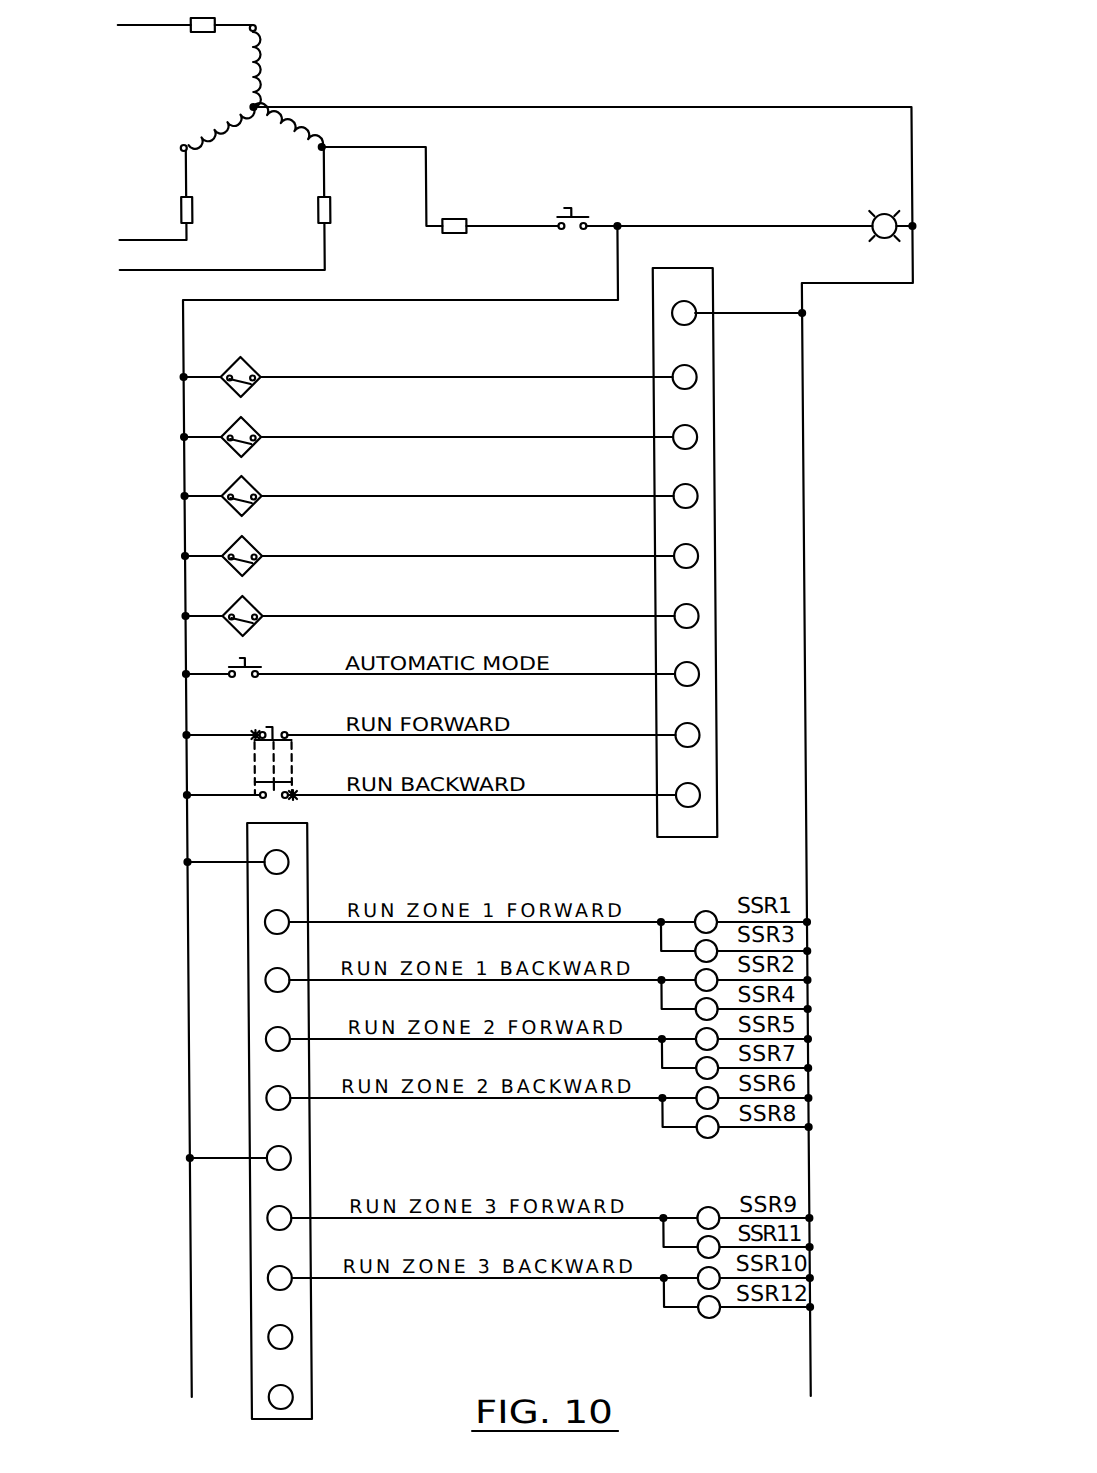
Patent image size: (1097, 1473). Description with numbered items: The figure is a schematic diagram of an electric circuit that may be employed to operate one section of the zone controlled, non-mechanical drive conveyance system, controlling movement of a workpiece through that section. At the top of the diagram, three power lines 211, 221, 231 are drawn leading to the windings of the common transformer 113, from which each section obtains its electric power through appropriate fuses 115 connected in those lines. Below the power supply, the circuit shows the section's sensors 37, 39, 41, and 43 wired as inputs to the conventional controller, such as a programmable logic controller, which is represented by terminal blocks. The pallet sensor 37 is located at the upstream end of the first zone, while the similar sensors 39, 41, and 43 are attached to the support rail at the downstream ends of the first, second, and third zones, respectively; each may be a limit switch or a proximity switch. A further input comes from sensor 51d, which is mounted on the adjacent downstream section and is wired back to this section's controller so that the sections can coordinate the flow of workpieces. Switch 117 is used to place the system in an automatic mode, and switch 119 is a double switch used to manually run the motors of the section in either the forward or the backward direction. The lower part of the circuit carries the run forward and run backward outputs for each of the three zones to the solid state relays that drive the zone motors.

The power line 211 is at (175, 37).
The power line 221 is at (142, 225).
The power line 231 is at (211, 247).
The fuses 115 is at (320, 200).
The common transformer 113 is at (297, 70).
The pallet sensor 37 is at (237, 368).
The sensor 39 is at (237, 428).
The sensor 41 is at (237, 487).
The sensor 43 is at (237, 547).
The sensor 51d is at (237, 607).
The switch 117 is at (228, 662).
The switch 119 is at (251, 768).